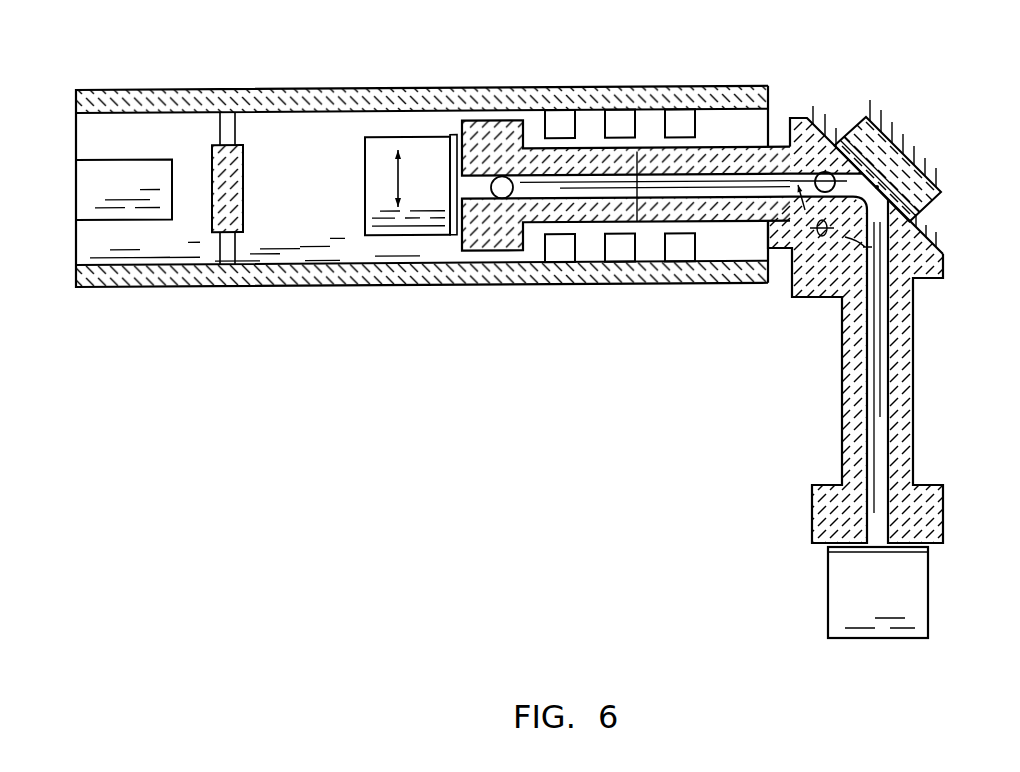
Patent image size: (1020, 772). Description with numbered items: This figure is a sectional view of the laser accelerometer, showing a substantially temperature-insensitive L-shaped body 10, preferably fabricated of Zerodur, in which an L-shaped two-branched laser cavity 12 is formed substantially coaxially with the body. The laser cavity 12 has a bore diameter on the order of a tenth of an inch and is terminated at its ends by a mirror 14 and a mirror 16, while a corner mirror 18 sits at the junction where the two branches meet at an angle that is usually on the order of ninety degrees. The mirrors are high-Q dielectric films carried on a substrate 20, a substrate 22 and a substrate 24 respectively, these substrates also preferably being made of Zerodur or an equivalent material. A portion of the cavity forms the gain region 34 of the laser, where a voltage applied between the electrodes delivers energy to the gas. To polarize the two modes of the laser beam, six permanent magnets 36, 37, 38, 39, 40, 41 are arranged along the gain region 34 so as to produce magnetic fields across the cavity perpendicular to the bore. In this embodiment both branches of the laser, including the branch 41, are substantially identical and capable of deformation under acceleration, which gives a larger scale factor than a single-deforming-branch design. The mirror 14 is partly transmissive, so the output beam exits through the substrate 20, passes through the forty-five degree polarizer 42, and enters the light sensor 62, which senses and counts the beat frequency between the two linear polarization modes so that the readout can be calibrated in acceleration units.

The L-shaped body 10 is at (935, 157).
The laser cavity 12 is at (875, 358).
The mirror 14 is at (452, 152).
The mirror 16 is at (842, 548).
The corner mirror 18 is at (886, 123).
The substrate 20 is at (378, 178).
The substrate 22 is at (847, 592).
The substrate 24 is at (940, 202).
The gain region 34 is at (752, 183).
The permanent magnet 36 is at (560, 114).
The permanent magnet 37 is at (560, 254).
The permanent magnet 38 is at (620, 114).
The permanent magnet 39 is at (620, 254).
The permanent magnet 40 is at (680, 114).
The permanent magnet 41 is at (678, 254).
The polarizer 42 is at (233, 193).
The light sensor 62 is at (128, 170).